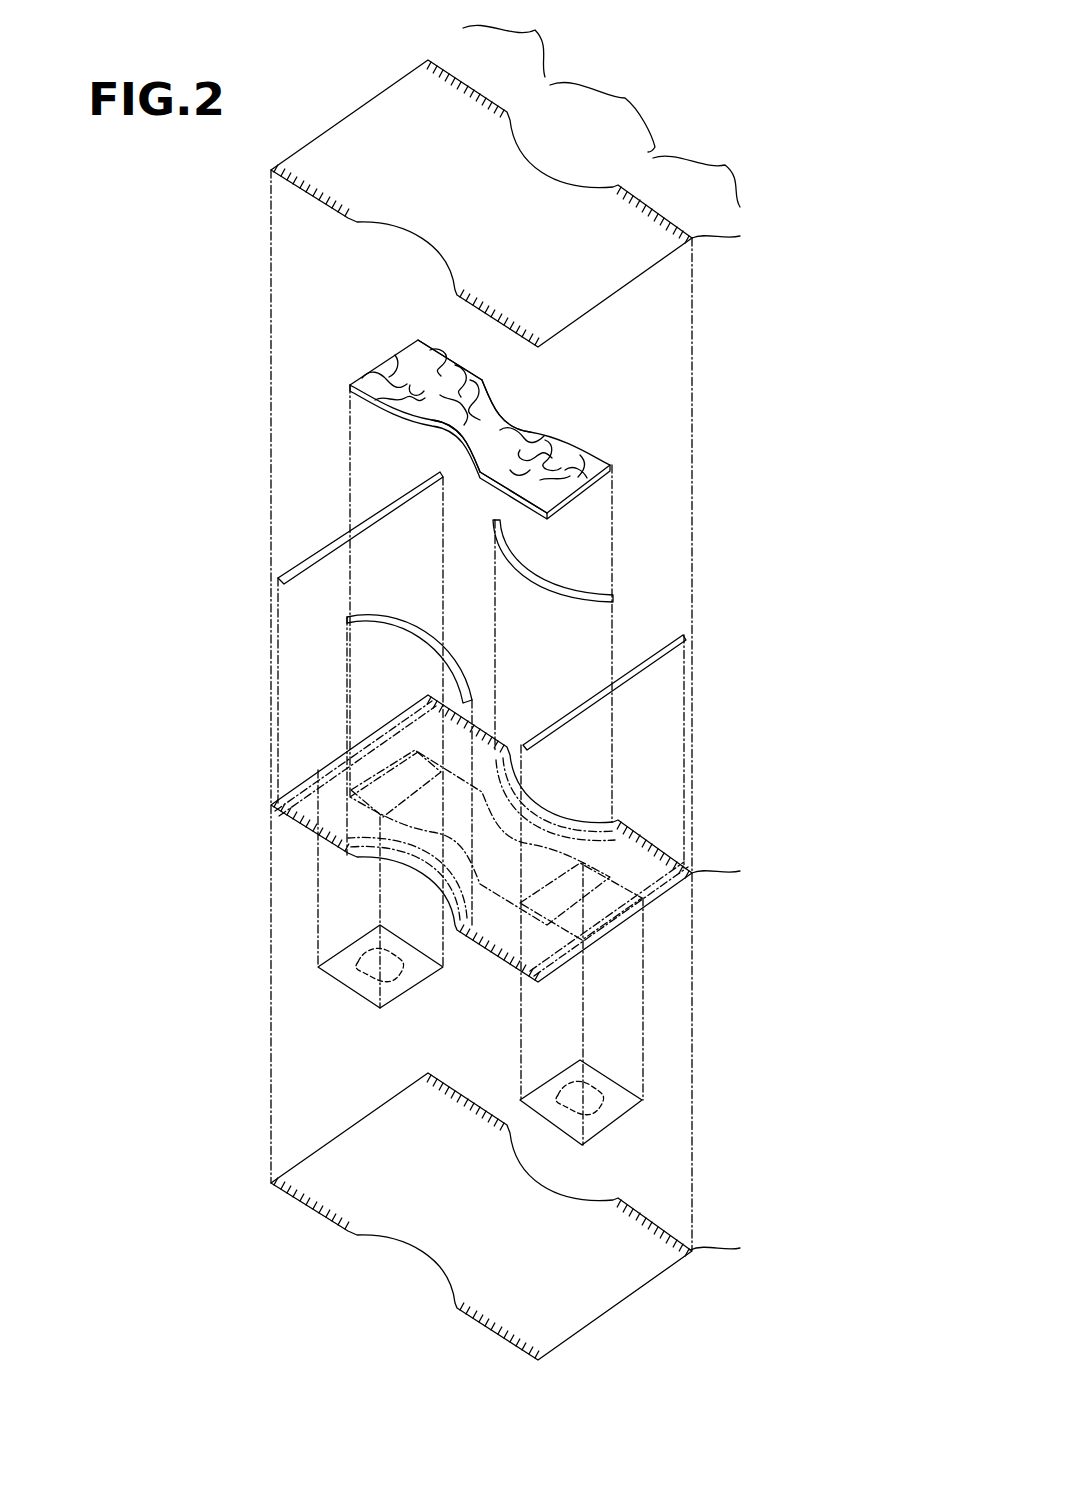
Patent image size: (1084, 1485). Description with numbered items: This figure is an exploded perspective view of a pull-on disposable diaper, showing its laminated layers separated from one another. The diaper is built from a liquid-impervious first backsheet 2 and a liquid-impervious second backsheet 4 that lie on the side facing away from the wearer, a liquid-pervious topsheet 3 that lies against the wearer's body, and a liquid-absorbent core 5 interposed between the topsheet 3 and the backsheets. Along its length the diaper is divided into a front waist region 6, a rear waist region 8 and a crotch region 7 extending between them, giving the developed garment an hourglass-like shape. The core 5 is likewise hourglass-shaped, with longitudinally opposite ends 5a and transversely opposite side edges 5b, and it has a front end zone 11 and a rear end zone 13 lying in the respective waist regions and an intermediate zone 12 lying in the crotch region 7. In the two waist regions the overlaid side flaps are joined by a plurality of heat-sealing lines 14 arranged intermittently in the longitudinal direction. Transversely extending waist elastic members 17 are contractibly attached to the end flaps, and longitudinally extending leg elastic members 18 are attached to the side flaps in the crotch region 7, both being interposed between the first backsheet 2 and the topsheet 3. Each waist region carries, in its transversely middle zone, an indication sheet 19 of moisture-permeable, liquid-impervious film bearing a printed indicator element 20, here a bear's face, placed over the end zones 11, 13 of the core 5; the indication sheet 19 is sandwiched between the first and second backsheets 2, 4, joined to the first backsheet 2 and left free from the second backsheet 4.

The first backsheet 2 is at (514, 838).
The topsheet 3 is at (514, 203).
The second backsheet 4 is at (514, 1216).
The core 5 is at (573, 463).
The longitudinally opposite ends of the core 5a is at (370, 368).
The transversely opposite side edges of the core 5b is at (538, 423).
The front waist region 6 is at (699, 177).
The crotch region 7 is at (602, 114).
The rear waist region 8 is at (509, 43).
The front end zone 11 is at (555, 490).
The intermediate zone 12 is at (495, 413).
The rear end zone 13 is at (418, 367).
The heat-sealing lines 14 is at (467, 83).
The waist elastic members 17 is at (335, 545).
The leg elastic members 18 is at (538, 588).
The indication sheet 19 is at (380, 1010).
The indicator element 20 is at (372, 970).